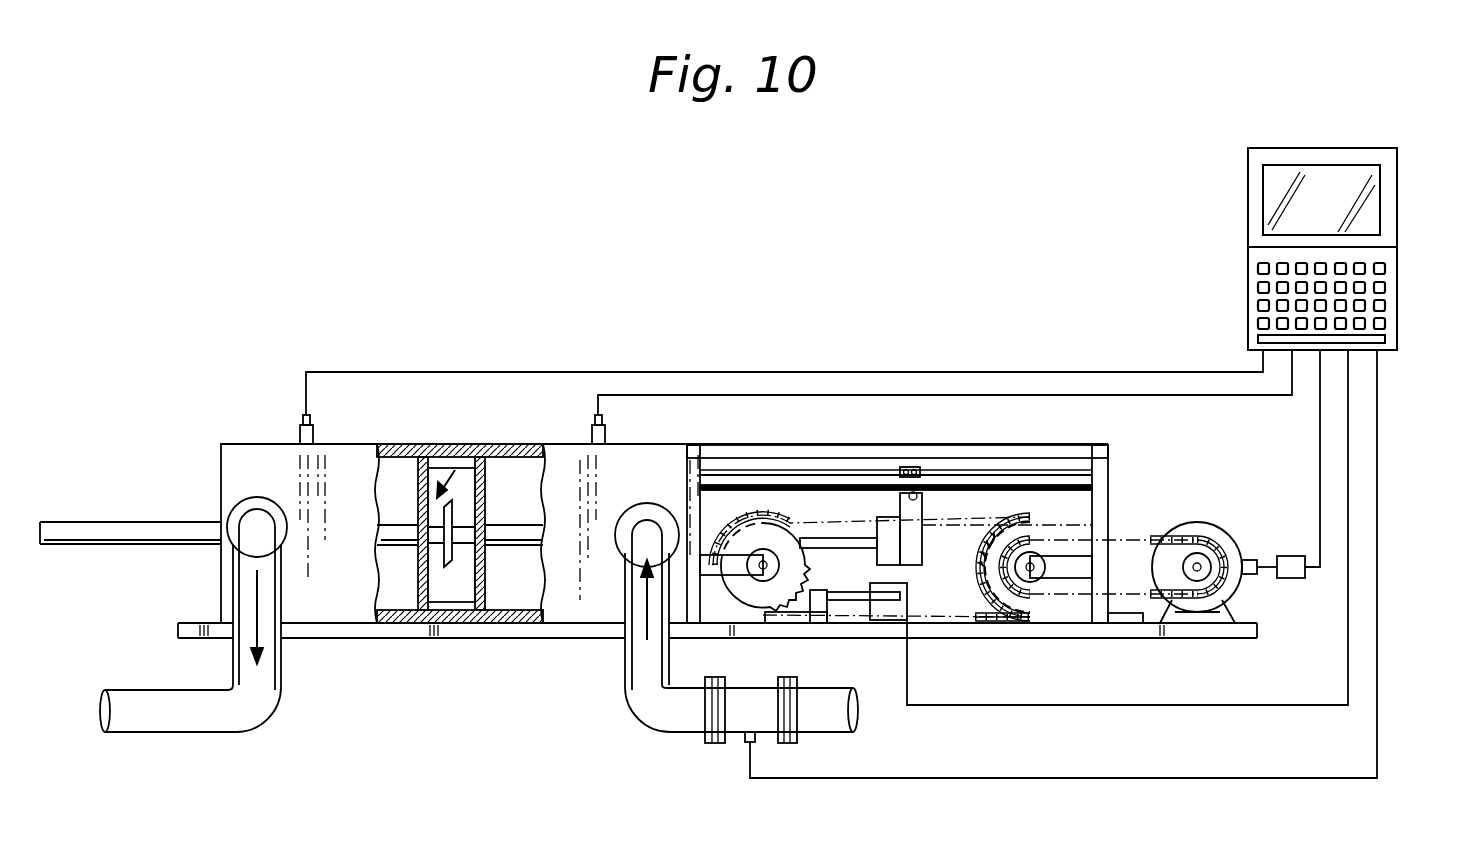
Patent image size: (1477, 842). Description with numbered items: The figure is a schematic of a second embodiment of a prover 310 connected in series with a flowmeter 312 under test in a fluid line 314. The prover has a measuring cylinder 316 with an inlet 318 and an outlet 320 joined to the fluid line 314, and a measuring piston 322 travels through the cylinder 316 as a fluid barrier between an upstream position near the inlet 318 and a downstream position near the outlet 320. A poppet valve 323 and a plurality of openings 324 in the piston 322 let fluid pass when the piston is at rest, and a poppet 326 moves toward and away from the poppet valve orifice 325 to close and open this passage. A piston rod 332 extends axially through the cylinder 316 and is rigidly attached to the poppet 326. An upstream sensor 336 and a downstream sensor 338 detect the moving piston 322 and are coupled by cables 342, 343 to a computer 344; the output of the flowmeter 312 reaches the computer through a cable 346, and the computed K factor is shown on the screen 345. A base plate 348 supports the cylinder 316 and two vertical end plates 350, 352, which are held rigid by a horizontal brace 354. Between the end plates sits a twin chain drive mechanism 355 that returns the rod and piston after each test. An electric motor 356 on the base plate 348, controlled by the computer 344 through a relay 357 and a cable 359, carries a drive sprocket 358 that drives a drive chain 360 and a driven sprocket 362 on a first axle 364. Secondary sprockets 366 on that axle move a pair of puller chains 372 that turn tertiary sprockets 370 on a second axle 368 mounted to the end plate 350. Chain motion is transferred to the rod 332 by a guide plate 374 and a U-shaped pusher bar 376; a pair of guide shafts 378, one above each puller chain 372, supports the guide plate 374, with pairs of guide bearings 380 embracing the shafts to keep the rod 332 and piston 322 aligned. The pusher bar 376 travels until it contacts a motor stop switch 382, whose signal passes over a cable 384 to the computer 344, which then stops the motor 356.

The prover 310 is at (707, 290).
The flowmeter 312 is at (735, 750).
The fluid line 314 is at (195, 734).
The measuring cylinder 316 is at (221, 444).
The inlet 318 is at (615, 622).
The outlet 320 is at (240, 505).
The measuring piston 322 is at (413, 470).
The poppet valve 323 is at (447, 468).
The openings 324 is at (488, 480).
The poppet valve orifice 325 is at (405, 570).
The poppet 326 is at (440, 600).
The piston rod 332 is at (200, 522).
The upstream sensor 336 is at (606, 430).
The downstream sensor 338 is at (300, 426).
The cable 342 is at (1140, 372).
The cable 343 is at (1222, 395).
The computer 344 is at (1372, 148).
The screen 345 is at (1370, 196).
The cable 346 is at (1377, 758).
The base plate 348 is at (200, 627).
The end plate 350 is at (700, 452).
The end plate 352 is at (1108, 505).
The brace 354 is at (1045, 458).
The twin chain drive mechanism 355 is at (826, 430).
The electric motor 356 is at (765, 520).
The relay 357 is at (1295, 556).
The drive sprocket 358 is at (1215, 588).
The cable 359 is at (1320, 415).
The drive chain 360 is at (1180, 627).
The driven sprocket 362 is at (1025, 605).
The first axle 364 is at (1050, 602).
The secondary sprockets 366 is at (990, 582).
The second axle 368 is at (732, 626).
The tertiary sprockets 370 is at (810, 522).
The puller chains 372 is at (775, 605).
The guide plate 374 is at (910, 467).
The pusher bar 376 is at (880, 622).
The guide shafts 378 is at (1058, 475).
The guide bearings 380 is at (920, 495).
The motor stop switch 382 is at (818, 605).
The cable 384 is at (1348, 685).